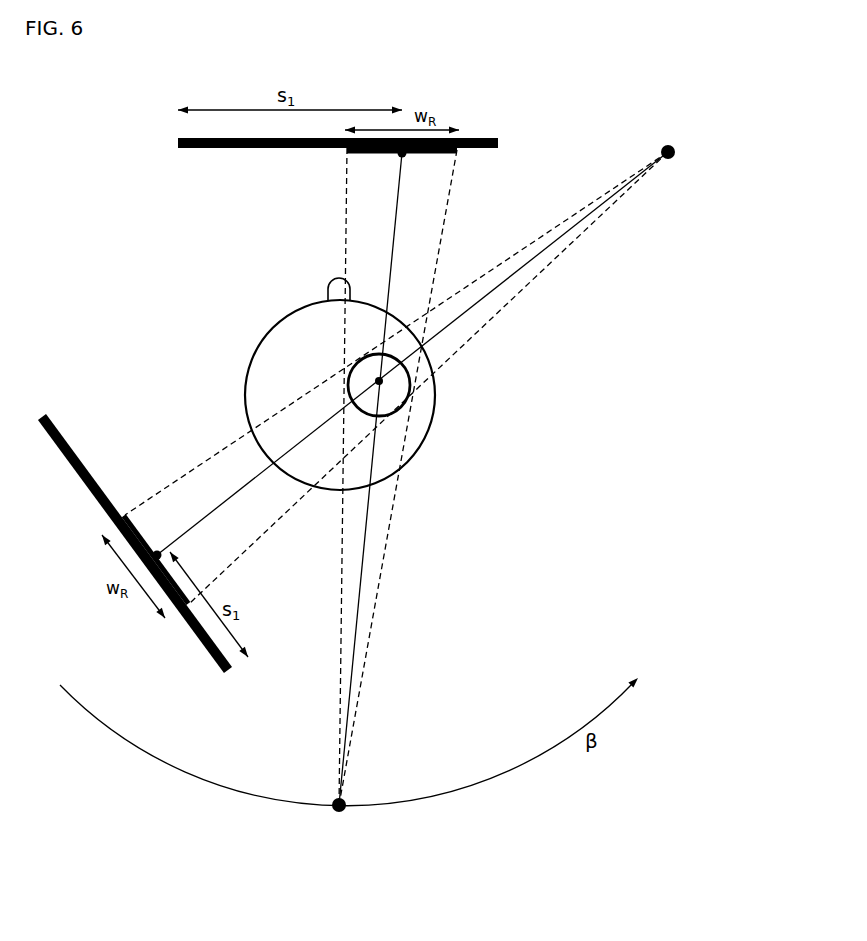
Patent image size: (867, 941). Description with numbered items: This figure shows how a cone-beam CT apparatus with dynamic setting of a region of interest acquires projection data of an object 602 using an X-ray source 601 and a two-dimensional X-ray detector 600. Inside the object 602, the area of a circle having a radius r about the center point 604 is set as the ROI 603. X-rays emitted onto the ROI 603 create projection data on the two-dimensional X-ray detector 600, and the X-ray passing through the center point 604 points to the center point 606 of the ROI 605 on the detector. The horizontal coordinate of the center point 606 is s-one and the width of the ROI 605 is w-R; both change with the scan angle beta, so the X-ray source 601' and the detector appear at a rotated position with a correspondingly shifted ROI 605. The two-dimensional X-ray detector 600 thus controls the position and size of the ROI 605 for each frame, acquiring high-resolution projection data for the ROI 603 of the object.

The two-dimensional X-ray detector 600 is at (178, 143).
The X-ray source 601 is at (324, 835).
The X-ray source 601' is at (710, 129).
The object 602 is at (245, 373).
The ROI 603 is at (362, 358).
The center point 604 is at (384, 384).
The ROI 605 is at (440, 154).
The center point of the ROI 606 is at (405, 157).